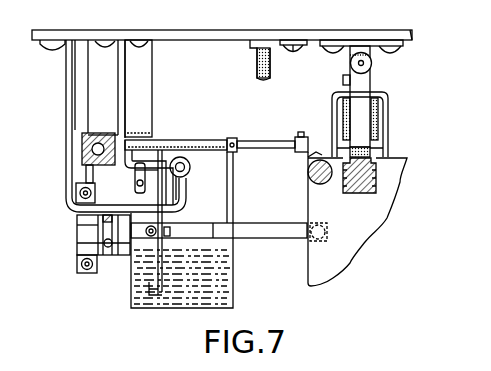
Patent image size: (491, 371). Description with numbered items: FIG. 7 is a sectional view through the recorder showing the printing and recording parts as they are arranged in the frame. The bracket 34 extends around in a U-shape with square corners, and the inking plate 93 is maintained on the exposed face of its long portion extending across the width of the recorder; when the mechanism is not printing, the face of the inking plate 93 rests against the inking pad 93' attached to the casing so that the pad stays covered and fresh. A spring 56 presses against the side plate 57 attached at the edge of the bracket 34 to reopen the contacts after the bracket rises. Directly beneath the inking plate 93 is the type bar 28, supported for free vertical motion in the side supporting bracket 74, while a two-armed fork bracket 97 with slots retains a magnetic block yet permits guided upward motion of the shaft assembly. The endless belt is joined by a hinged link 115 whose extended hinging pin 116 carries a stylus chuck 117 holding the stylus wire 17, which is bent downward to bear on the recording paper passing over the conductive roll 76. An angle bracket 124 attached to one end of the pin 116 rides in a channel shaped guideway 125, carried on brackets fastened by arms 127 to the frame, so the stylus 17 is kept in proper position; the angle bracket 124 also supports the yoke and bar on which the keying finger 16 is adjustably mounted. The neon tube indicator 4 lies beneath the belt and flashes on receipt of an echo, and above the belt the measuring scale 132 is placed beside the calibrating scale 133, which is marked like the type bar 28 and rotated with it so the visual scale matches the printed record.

The neon tube indicator 4 is at (190, 167).
The keying finger 16 is at (143, 188).
The stylus wire 17 is at (322, 152).
The type bar 28 is at (378, 174).
The bracket 34 is at (363, 90).
The spring 56 is at (300, 60).
The side plate 57 is at (345, 130).
The side supporting bracket 74 is at (363, 232).
The conductive roll 76 is at (322, 185).
The inking plate 93 is at (384, 145).
The inking pad 93' is at (242, 60).
The fork bracket 97 is at (330, 118).
The hinged link 115 is at (207, 140).
The hinging pin 116 is at (264, 139).
The stylus chuck 117 is at (297, 153).
The angle bracket 124 is at (127, 167).
The channel shaped guideway 125 is at (152, 165).
The arm 127 is at (201, 222).
The measuring scale 132 is at (147, 87).
The calibrating scale 133 is at (102, 133).